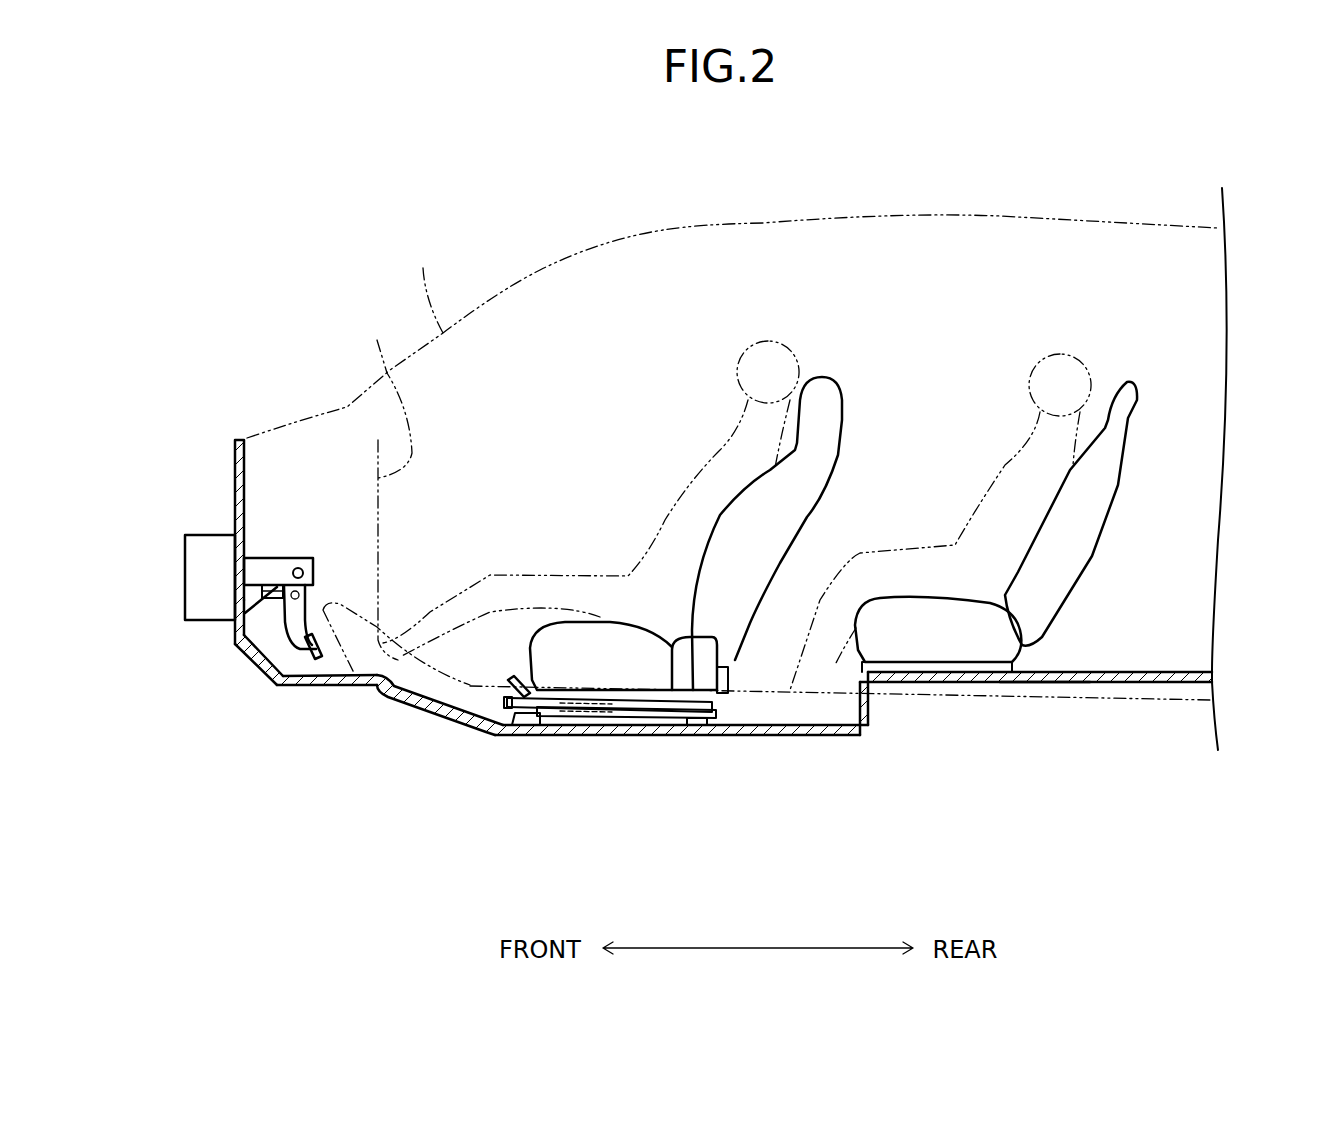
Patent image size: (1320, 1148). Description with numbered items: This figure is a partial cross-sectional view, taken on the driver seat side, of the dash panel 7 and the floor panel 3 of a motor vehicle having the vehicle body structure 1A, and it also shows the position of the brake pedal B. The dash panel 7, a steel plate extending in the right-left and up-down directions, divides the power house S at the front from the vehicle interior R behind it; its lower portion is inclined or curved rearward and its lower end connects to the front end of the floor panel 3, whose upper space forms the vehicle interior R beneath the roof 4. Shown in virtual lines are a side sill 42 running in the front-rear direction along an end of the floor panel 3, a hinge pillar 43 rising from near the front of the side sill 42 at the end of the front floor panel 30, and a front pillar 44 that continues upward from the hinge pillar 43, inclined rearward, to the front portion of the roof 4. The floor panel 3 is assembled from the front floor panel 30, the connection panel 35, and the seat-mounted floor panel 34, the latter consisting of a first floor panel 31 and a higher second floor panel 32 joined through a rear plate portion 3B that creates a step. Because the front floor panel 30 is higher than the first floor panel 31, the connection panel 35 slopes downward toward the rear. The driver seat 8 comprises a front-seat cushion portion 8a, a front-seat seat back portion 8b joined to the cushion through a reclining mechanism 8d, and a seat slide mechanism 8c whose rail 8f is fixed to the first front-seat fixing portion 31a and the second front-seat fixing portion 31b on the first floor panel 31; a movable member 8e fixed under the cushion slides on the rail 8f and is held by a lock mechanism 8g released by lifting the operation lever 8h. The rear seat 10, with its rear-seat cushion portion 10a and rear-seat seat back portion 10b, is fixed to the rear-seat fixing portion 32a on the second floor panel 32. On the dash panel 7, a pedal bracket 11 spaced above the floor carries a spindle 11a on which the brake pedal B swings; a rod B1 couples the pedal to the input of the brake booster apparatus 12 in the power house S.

The vehicle body structure 1A is at (550, 320).
The floor panel 3 is at (372, 848).
The rear plate portion 3B is at (859, 708).
The roof 4 is at (763, 223).
The dash panel 7 is at (235, 463).
The driver seat 8 is at (688, 550).
The front-seat cushion portion 8a is at (600, 622).
The front-seat seat back portion 8b is at (841, 455).
The seat slide mechanism 8c is at (584, 583).
The reclining mechanism 8d is at (745, 640).
The movable member 8e is at (527, 690).
The rail 8f is at (512, 677).
The lock mechanism 8g is at (590, 715).
The operation lever 8h is at (505, 736).
The rear seat 10 is at (1027, 479).
The rear-seat cushion portion 10a is at (1023, 650).
The rear-seat seat back portion 10b is at (1097, 554).
The pedal bracket 11 is at (280, 558).
The spindle 11a is at (308, 570).
The brake booster apparatus 12 is at (185, 600).
The front floor panel 30 is at (357, 688).
The first floor panel 31 is at (830, 736).
The first front-seat fixing portion 31a is at (545, 718).
The second front-seat fixing portion 31b is at (695, 736).
The second floor panel 32 is at (900, 683).
The rear-seat fixing portion 32a is at (1044, 683).
The seat-mounted floor panel 34 is at (818, 800).
The connection panel 35 is at (425, 700).
The side sill 42 is at (1210, 700).
The hinge pillar 43 is at (383, 483).
The front pillar 44 is at (422, 285).
The brake pedal B is at (270, 652).
The rod B1 is at (257, 618).
The vehicle interior R is at (622, 433).
The power house S is at (151, 523).